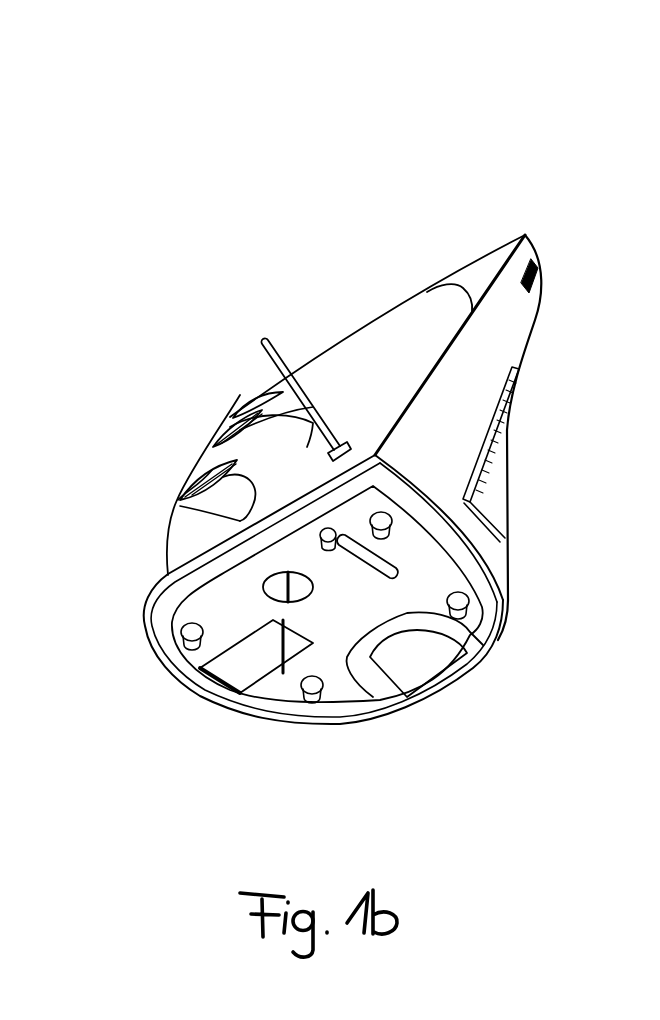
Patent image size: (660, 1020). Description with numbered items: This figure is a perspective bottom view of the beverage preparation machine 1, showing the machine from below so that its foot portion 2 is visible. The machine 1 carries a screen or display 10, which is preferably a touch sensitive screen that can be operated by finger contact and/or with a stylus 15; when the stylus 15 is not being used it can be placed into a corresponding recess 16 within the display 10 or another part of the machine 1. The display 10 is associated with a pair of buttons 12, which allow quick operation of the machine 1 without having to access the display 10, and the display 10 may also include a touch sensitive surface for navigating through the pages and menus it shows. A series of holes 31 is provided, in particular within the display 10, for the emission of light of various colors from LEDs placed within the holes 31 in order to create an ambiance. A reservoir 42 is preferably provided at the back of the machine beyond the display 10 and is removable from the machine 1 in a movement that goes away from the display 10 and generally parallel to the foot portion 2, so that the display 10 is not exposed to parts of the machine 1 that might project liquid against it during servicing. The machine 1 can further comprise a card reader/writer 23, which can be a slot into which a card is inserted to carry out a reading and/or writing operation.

The beverage preparation machine 1 is at (497, 98).
The foot portion 2 is at (483, 653).
The display 10 is at (398, 360).
The pair of buttons 12 is at (207, 450).
The stylus 15 is at (280, 357).
The recess 16 is at (157, 545).
The card reader/writer 23 is at (535, 258).
The holes 31 is at (452, 277).
The reservoir 42 is at (493, 497).